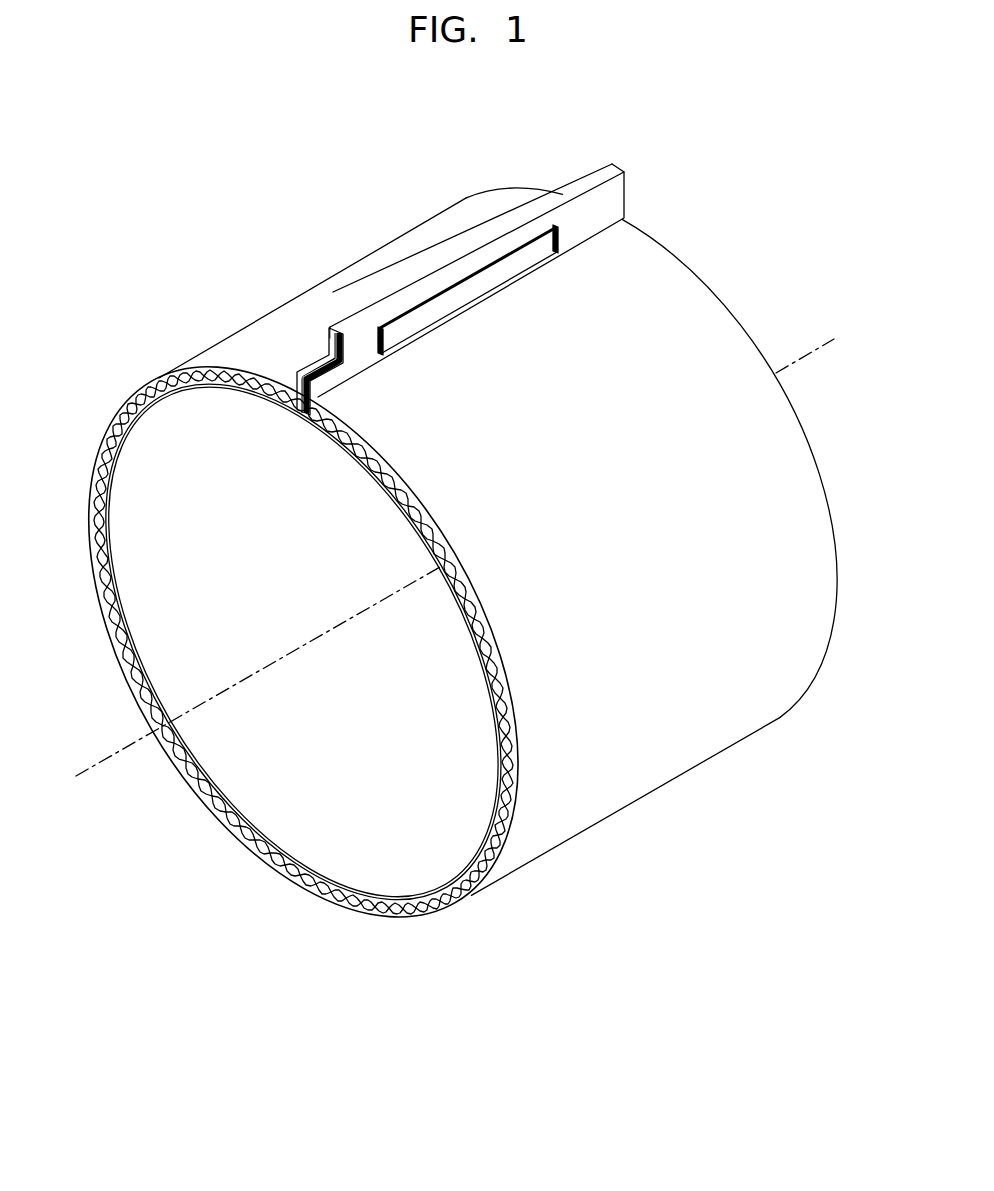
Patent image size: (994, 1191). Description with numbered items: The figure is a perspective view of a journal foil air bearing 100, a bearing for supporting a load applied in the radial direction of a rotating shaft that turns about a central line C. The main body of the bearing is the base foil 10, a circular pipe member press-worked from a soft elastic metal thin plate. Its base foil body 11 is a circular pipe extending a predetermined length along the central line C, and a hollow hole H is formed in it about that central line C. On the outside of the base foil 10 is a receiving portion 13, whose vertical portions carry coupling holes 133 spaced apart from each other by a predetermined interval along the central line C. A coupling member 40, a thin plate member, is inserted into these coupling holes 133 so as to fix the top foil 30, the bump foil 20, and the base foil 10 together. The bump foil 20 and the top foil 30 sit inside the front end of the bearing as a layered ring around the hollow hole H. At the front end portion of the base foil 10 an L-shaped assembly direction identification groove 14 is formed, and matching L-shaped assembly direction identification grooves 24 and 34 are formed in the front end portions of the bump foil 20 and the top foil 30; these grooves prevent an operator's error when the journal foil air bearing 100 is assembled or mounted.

The journal foil air bearing 100 is at (418, 567).
The base foil 10 is at (498, 546).
The base foil body 11 is at (677, 279).
The receiving portion 13 is at (497, 276).
The coupling holes 133 is at (555, 251).
The coupling member 40 is at (508, 262).
The assembly direction identification groove 14 is at (283, 333).
The assembly direction identification groove 24 is at (283, 333).
The assembly direction identification groove 34 is at (318, 360).
The bump foil 20 is at (303, 642).
The top foil 30 is at (442, 895).
The hollow hole H is at (185, 611).
The central line C is at (132, 748).